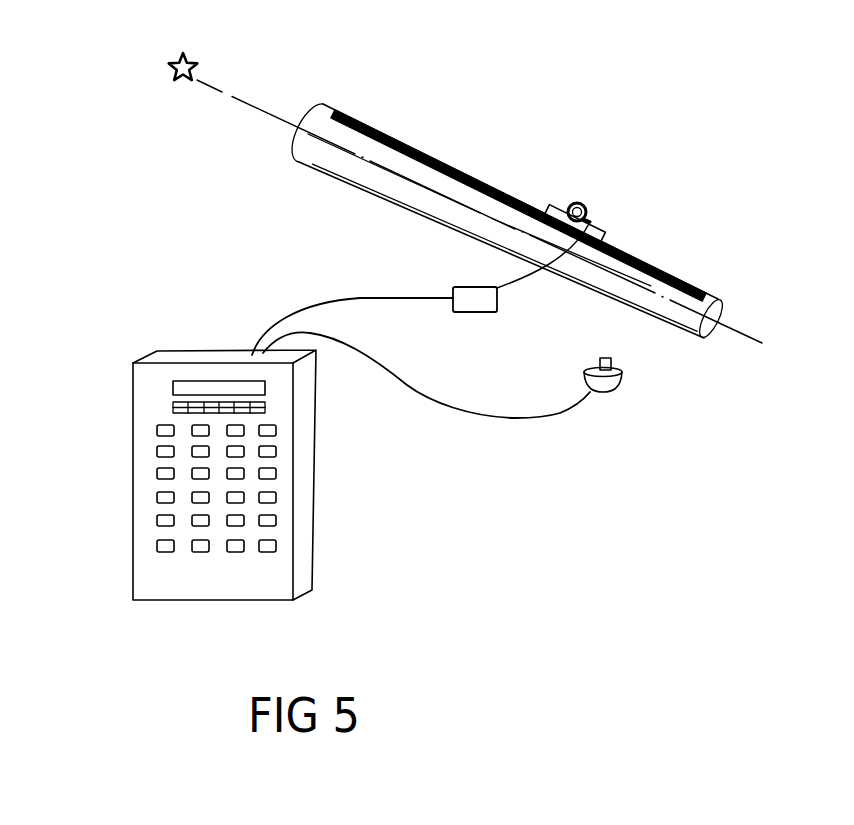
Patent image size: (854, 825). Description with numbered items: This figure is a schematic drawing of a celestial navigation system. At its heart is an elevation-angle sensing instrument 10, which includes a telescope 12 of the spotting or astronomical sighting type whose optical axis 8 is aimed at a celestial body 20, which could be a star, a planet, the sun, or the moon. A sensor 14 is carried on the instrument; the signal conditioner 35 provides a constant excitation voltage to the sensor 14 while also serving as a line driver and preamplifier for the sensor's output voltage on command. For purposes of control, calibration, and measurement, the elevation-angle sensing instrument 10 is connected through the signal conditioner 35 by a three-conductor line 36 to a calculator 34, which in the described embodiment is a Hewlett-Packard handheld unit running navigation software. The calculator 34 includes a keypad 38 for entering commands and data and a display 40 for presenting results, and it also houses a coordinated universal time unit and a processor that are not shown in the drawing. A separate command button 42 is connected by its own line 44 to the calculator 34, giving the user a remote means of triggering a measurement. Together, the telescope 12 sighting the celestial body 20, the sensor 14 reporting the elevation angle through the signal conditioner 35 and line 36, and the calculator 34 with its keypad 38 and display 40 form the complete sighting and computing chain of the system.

The optical axis line of sight 8 is at (238, 92).
The elevation-angle sensing instrument 10 is at (509, 196).
The telescope 12 is at (397, 133).
The sensor 14 is at (588, 205).
The celestial body 20 is at (205, 25).
The calculator 34 is at (169, 444).
The signal conditioner 35 is at (470, 312).
The 3-conductor line 36 is at (357, 298).
The keypad 38 is at (145, 481).
The display 40 is at (200, 388).
The command button 42 is at (622, 377).
The line 44 is at (560, 414).